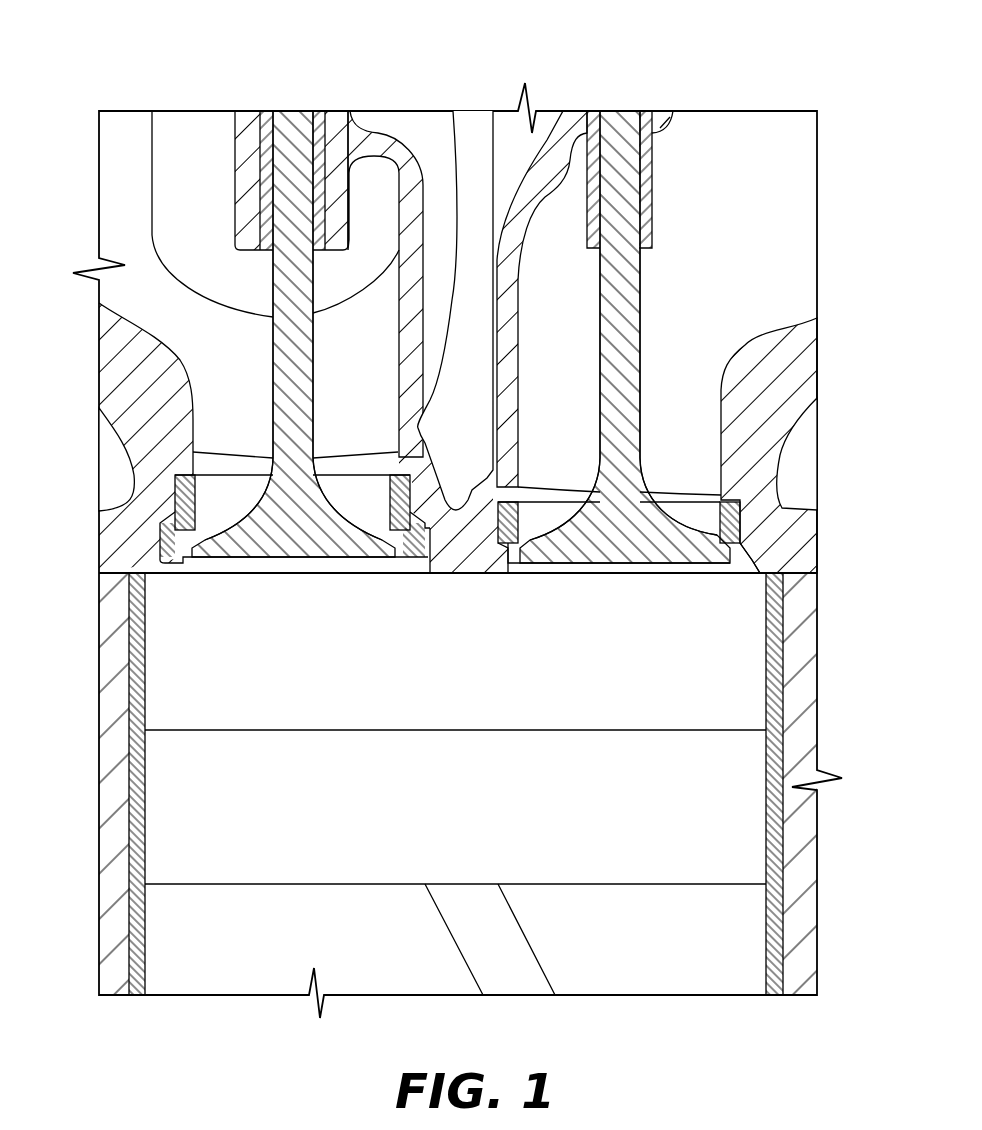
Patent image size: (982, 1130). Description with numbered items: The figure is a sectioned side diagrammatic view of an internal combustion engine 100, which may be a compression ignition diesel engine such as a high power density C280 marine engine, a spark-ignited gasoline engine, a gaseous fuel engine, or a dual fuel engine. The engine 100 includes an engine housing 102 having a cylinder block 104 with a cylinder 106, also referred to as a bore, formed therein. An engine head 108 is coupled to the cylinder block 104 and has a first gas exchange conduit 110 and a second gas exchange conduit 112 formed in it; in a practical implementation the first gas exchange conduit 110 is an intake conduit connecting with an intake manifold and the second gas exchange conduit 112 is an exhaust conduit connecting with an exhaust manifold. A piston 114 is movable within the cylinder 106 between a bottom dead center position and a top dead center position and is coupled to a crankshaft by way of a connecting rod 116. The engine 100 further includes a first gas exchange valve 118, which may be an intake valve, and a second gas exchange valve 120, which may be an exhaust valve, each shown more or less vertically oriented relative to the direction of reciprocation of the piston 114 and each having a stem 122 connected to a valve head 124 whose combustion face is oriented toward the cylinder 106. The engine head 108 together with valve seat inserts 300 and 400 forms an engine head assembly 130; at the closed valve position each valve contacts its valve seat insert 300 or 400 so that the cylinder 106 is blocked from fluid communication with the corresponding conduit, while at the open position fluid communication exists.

The internal combustion engine 100 is at (674, 46).
The engine housing 102 is at (868, 545).
The cylinder block 104 is at (817, 722).
The cylinder 106 is at (428, 679).
The engine head 108 is at (805, 362).
The first gas exchange conduit 110 is at (797, 250).
The second gas exchange conduit 112 is at (232, 426).
The piston 114 is at (628, 872).
The connecting rod 116 is at (512, 958).
The first gas exchange valve 118 is at (631, 546).
The second gas exchange valve 120 is at (266, 546).
The stem 122 is at (290, 177).
The valve head 124 is at (330, 543).
The engine head assembly 130 is at (57, 456).
The valve seat insert 300 is at (737, 488).
The valve seat insert 400 is at (440, 543).